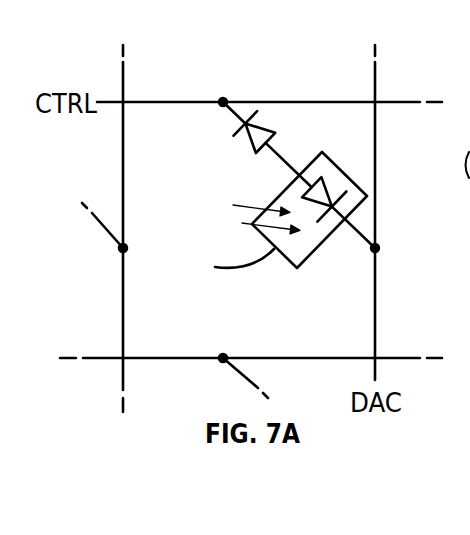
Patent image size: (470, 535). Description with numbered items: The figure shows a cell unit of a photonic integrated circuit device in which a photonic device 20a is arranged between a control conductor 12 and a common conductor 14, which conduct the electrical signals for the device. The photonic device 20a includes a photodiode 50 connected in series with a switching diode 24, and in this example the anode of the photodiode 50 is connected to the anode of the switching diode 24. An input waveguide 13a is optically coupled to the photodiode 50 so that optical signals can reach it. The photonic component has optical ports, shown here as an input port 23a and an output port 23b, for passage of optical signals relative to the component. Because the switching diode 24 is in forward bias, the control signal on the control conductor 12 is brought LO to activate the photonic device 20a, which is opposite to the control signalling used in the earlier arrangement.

The control conductor 12 is at (186, 101).
The common conductor 14 is at (377, 306).
The photonic device 20a is at (153, 298).
The input port 23a is at (225, 100).
The output port 23b is at (379, 248).
The switching diode 24 is at (270, 126).
The photodiode 50 is at (361, 178).
The input waveguide 13a is at (250, 267).